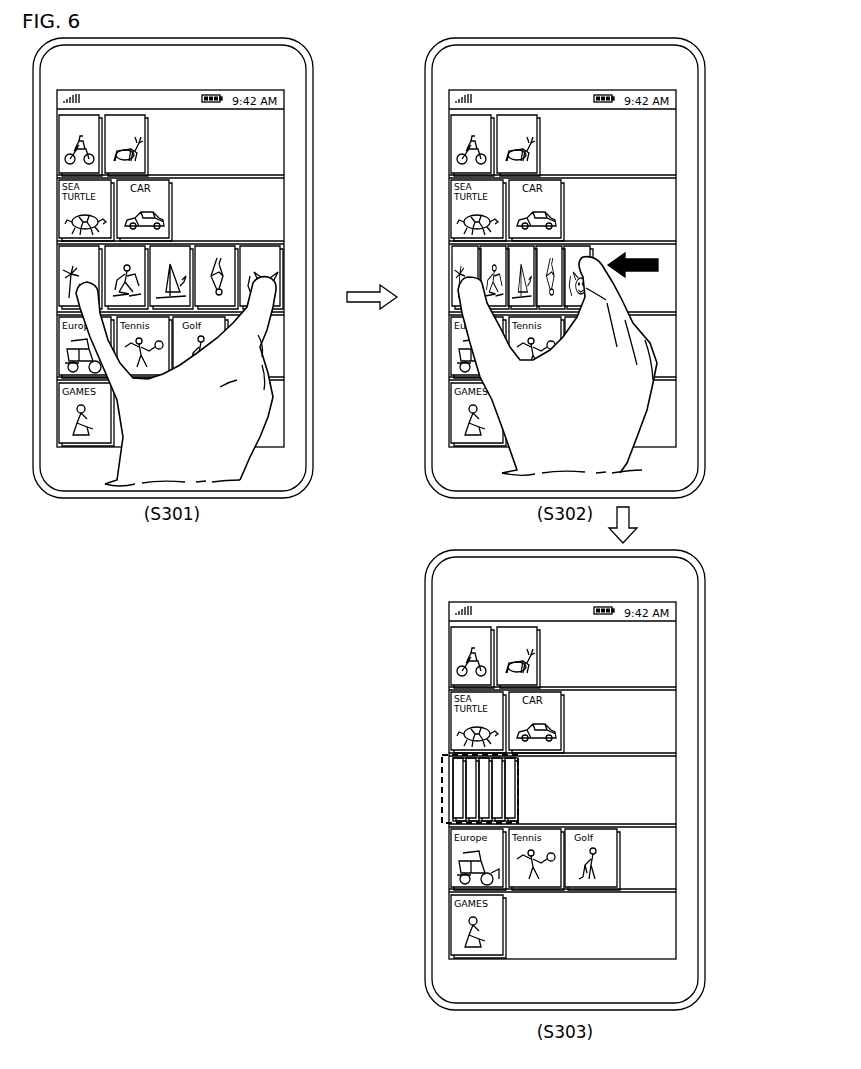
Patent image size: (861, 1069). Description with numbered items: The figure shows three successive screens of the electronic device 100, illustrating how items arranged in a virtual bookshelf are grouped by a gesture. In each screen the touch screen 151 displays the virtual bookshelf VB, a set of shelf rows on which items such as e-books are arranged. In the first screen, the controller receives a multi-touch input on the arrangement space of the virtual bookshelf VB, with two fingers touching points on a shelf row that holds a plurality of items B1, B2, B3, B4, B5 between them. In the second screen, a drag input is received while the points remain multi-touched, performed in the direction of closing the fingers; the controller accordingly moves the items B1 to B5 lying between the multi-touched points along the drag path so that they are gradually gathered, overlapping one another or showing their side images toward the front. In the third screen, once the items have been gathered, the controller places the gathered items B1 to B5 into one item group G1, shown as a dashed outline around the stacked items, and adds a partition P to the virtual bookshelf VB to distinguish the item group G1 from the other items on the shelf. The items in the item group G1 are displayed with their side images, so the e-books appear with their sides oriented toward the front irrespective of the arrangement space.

The electronic device 100 is at (313, 64).
The touch screen 151 is at (284, 98).
The virtual bookshelf VB is at (284, 136).
The item B1 is at (80, 250).
The item B2 is at (125, 250).
The item B3 is at (168, 255).
The item B4 is at (220, 253).
The item B5 is at (277, 258).
The partition P is at (518, 787).
The item group G1 is at (440, 821).